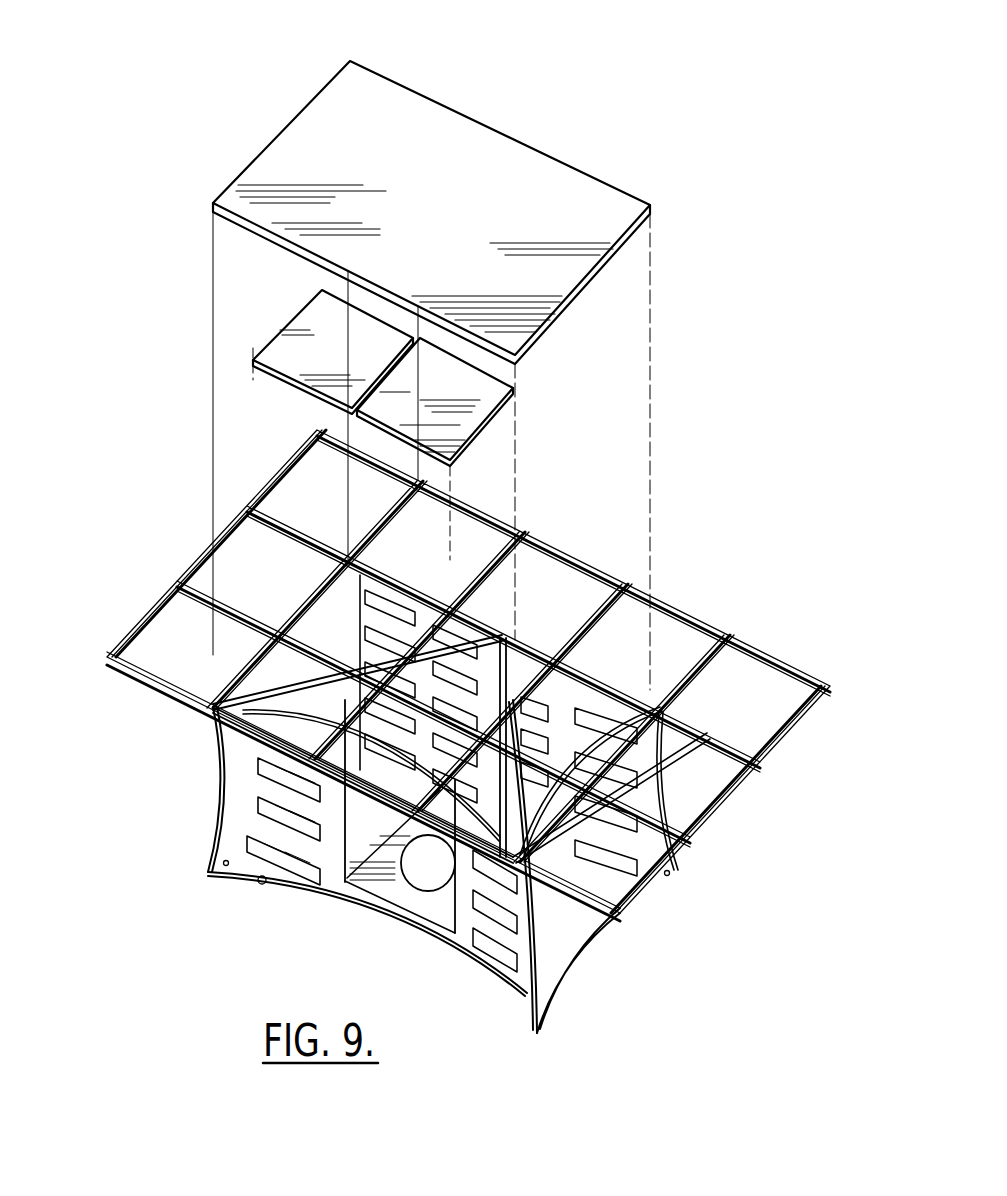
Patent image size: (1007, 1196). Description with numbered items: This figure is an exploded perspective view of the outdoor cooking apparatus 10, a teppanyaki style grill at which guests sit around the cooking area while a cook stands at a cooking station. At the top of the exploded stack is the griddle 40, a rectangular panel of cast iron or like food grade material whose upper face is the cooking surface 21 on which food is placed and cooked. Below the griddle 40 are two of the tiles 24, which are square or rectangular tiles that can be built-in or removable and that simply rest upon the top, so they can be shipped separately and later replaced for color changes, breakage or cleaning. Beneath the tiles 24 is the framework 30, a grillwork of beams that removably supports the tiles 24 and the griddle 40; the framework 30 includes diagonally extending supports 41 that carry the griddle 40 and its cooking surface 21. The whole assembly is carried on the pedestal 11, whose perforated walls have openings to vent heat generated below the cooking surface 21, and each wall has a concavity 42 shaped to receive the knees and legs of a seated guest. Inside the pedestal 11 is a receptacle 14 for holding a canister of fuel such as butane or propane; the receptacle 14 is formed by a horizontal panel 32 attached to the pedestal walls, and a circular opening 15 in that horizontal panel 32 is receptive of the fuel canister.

The outdoor cooking apparatus 10 is at (601, 97).
The griddle 40 is at (442, 212).
The cooking surface 21 is at (448, 222).
The tiles 24 is at (300, 328).
The framework 30 is at (728, 640).
The diagonally extending supports 41 is at (309, 672).
The pedestal 11 is at (213, 868).
The horizontal panel 32 is at (373, 873).
The circular opening 15 is at (428, 878).
The receptacle 14 is at (425, 938).
The concavity 42 is at (604, 923).